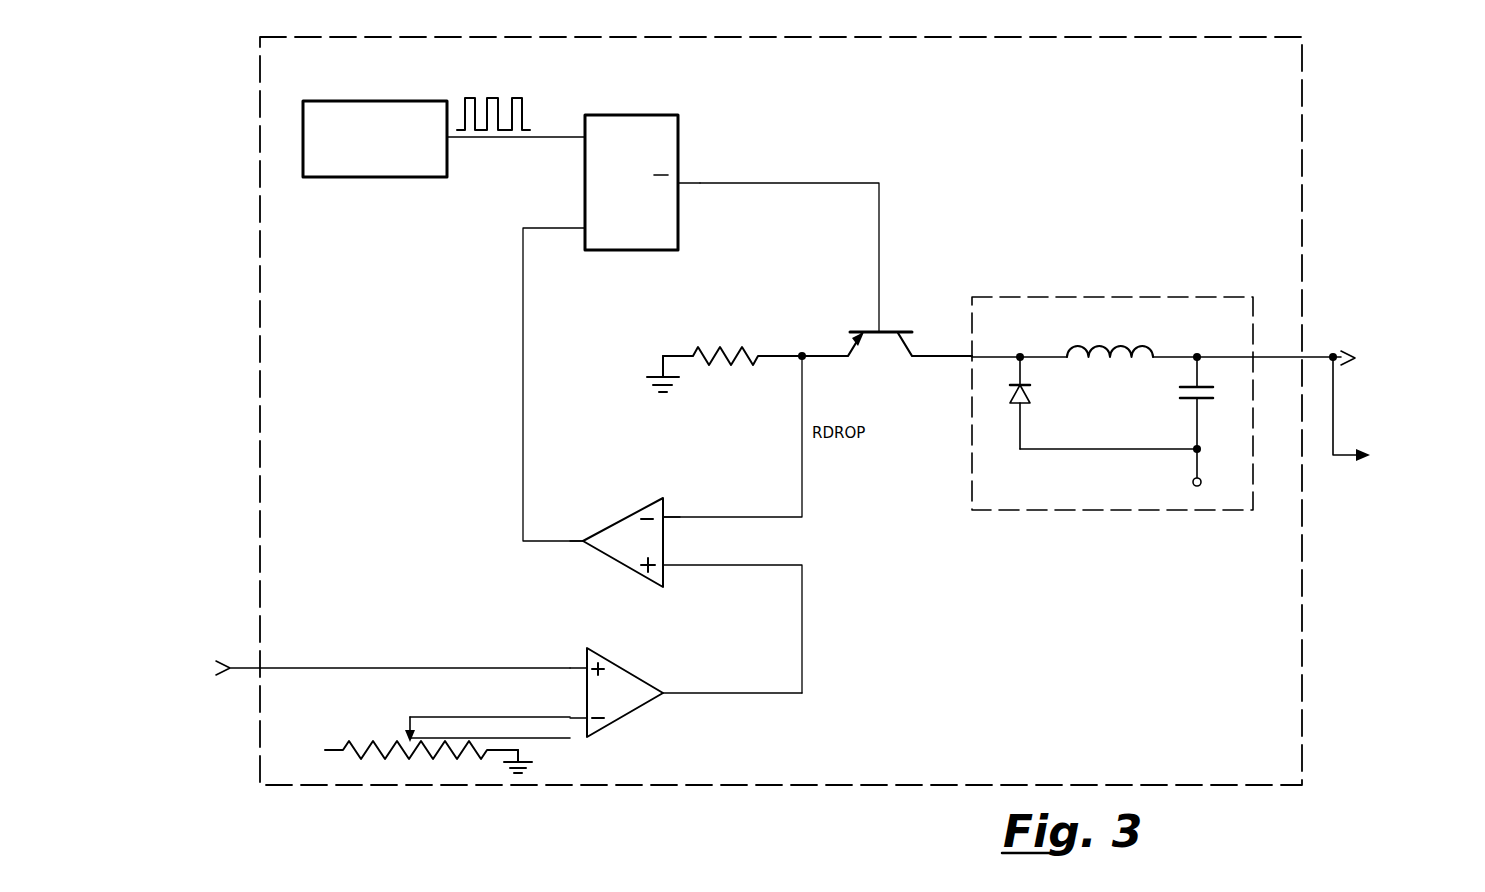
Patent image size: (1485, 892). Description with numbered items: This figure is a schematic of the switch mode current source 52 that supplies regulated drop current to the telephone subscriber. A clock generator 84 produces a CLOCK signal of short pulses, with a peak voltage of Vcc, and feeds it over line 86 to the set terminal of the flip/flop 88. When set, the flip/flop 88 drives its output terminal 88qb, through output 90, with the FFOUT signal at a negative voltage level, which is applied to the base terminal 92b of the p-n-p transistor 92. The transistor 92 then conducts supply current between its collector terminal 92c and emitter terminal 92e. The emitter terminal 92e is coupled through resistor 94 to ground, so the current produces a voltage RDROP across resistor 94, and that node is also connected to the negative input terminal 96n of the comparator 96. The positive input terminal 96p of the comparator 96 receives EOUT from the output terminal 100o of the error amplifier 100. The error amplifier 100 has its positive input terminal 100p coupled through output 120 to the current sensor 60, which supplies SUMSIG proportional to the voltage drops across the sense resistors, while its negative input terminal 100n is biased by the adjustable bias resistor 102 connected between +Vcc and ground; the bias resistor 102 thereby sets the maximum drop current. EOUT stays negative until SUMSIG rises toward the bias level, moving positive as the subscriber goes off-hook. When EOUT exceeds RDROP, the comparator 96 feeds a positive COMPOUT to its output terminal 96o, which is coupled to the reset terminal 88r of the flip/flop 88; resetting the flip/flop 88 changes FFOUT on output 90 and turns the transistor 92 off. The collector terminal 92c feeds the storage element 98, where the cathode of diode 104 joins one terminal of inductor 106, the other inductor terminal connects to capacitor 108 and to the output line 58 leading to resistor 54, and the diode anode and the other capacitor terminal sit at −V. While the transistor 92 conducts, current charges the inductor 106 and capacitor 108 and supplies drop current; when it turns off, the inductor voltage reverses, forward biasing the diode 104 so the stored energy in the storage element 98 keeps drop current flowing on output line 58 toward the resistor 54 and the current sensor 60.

The switch mode current source 52 is at (1202, 787).
The clock generator 84 is at (342, 101).
The line 86 is at (500, 138).
The flip/flop 88 is at (584, 131).
The reset terminal 88r is at (584, 237).
The output terminal 88qb is at (683, 181).
The output 90 is at (786, 183).
The p-n-p transistor 92 is at (887, 319).
The base terminal 92b is at (876, 331).
The emitter terminal 92e is at (853, 343).
The collector terminal 92c is at (905, 338).
The resistor 94 is at (728, 354).
The comparator 96 is at (676, 590).
The negative input terminal 96n is at (690, 509).
The positive input terminal 96p is at (666, 566).
The output terminal 96o is at (583, 541).
The storage element 98 is at (1152, 385).
The diode 104 is at (1010, 396).
The inductor 106 is at (1090, 358).
The capacitor 108 is at (1192, 408).
The error amplifier 100 is at (670, 693).
The positive input terminal 100p is at (586, 666).
The negative input terminal 100n is at (585, 721).
The output terminal 100o is at (690, 676).
The adjustable bias resistor 102 is at (371, 740).
The output 120 is at (411, 668).
The output line 58 is at (1333, 355).
The resistor 54 is at (1415, 356).
The current sensor 60 is at (1415, 460).